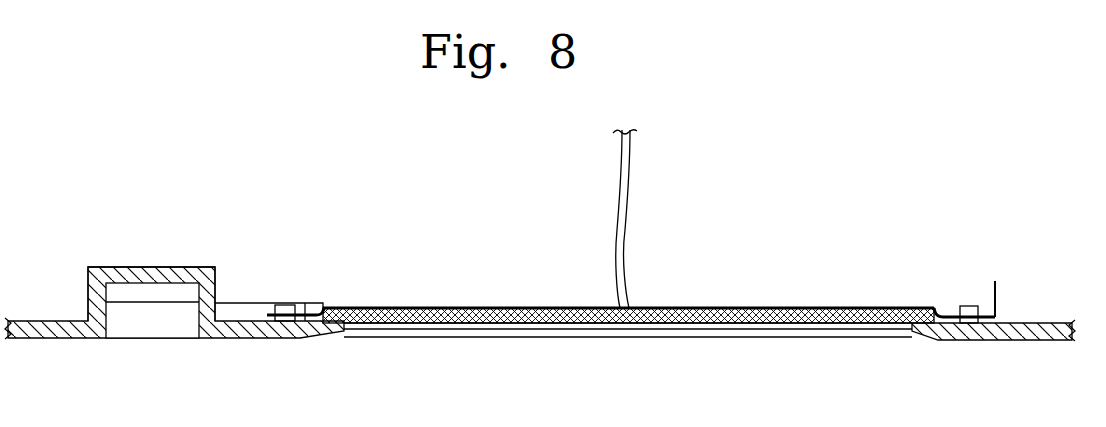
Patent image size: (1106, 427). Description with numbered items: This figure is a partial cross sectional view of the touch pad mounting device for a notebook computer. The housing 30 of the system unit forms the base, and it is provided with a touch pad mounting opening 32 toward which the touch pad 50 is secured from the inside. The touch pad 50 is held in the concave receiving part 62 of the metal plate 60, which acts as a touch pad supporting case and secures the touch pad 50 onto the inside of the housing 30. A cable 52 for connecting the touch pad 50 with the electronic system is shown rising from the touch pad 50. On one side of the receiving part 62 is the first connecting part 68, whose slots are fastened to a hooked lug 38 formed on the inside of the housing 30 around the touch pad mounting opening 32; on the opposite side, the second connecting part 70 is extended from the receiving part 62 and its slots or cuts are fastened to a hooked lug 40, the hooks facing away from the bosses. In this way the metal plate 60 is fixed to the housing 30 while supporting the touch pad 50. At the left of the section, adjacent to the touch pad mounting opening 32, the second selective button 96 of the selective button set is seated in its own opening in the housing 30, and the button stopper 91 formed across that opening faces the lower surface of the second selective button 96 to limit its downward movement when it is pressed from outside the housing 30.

The housing 30 is at (235, 340).
The touch pad mounting opening 32 is at (635, 329).
The lug 38 is at (283, 305).
The lug 40 is at (968, 306).
The touch pad 50 is at (470, 311).
The flexible printed circuit 52 is at (631, 177).
The metal plate 60 is at (375, 298).
The receiving part 62 is at (811, 308).
The first connecting part 68 is at (305, 301).
The second connecting part 70 is at (947, 313).
The button stopper 91 is at (145, 275).
The second selective button 96 is at (145, 330).